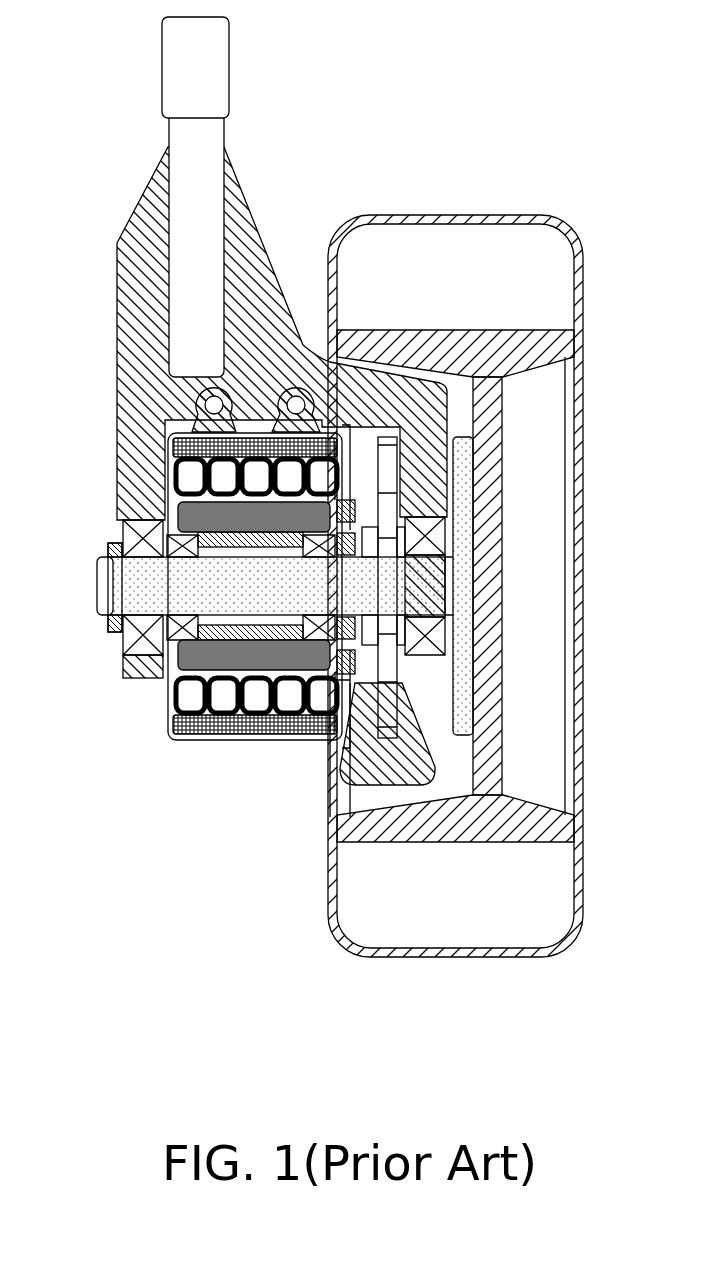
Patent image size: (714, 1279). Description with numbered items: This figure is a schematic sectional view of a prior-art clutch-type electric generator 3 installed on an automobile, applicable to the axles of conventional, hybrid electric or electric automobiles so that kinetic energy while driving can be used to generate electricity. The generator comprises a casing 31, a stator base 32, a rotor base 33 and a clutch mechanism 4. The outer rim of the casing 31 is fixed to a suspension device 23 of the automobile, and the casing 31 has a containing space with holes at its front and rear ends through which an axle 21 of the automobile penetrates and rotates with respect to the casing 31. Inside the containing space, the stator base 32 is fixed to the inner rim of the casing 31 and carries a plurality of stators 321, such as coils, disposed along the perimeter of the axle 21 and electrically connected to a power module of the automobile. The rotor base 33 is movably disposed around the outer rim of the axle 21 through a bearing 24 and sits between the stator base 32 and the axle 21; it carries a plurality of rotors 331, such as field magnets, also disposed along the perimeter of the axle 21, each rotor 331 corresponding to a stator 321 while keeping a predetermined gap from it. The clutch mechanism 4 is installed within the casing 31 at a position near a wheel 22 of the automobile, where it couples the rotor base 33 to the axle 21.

The clutch-type electric generator 3 is at (187, 676).
The clutch mechanism 4 is at (380, 733).
The axle 21 is at (133, 583).
The wheel 22 is at (495, 215).
The suspension device 23 is at (142, 218).
The bearing 24 is at (127, 630).
The casing 31 is at (237, 740).
The stator base 32 is at (187, 638).
The rotor base 33 is at (177, 670).
The stators 321 is at (197, 482).
The rotors 331 is at (187, 515).